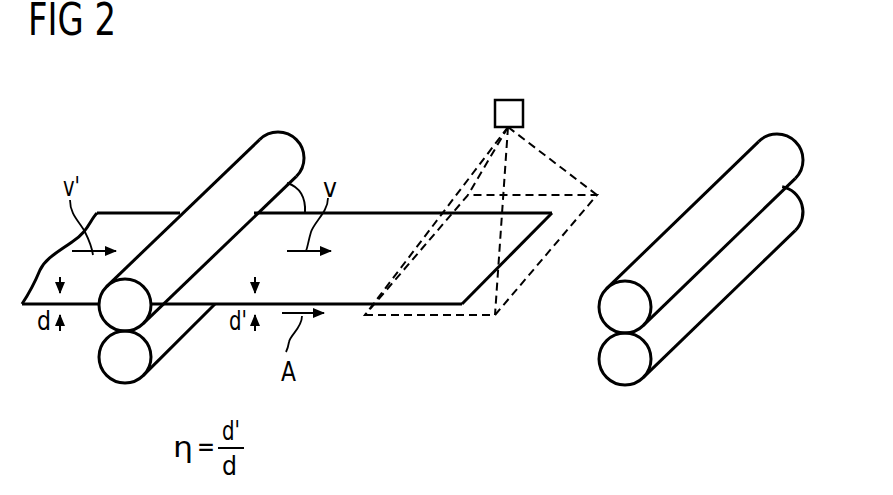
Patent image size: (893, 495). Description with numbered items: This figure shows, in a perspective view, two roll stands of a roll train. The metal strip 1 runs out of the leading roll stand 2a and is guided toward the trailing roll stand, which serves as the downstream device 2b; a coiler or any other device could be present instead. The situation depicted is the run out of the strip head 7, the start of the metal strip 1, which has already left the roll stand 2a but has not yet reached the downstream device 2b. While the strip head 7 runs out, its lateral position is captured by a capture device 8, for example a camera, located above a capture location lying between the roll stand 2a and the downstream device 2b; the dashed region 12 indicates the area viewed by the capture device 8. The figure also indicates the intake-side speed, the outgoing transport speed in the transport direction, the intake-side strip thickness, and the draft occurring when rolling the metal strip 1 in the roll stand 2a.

The metal strip 1 is at (143, 213).
The roll stand 2a is at (279, 118).
The downstream device 2b is at (777, 118).
The strip head 7 is at (510, 258).
The capture device 8 is at (510, 100).
The detection field of the sensor 12 is at (560, 240).